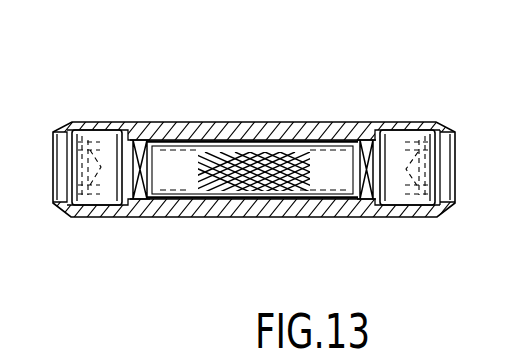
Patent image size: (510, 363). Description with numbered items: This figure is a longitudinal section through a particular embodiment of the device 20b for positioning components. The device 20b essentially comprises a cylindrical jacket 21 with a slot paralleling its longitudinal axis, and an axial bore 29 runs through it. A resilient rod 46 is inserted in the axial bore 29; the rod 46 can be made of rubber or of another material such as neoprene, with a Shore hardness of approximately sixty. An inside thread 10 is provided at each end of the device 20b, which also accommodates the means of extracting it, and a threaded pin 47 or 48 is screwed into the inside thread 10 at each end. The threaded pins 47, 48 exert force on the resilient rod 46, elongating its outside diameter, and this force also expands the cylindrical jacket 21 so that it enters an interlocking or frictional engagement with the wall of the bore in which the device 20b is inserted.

The device 20b is at (352, 112).
The cylindrical jacket 21 is at (200, 122).
The inside thread 10 is at (133, 131).
The axial bore 29 is at (275, 122).
The resilient rod 46 is at (201, 190).
The threaded pin 47 is at (105, 188).
The threaded pin 48 is at (406, 190).